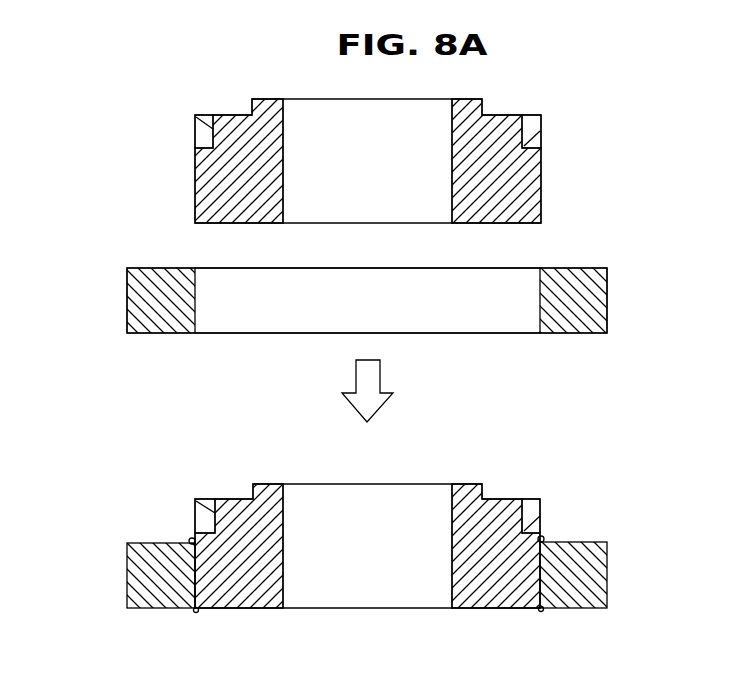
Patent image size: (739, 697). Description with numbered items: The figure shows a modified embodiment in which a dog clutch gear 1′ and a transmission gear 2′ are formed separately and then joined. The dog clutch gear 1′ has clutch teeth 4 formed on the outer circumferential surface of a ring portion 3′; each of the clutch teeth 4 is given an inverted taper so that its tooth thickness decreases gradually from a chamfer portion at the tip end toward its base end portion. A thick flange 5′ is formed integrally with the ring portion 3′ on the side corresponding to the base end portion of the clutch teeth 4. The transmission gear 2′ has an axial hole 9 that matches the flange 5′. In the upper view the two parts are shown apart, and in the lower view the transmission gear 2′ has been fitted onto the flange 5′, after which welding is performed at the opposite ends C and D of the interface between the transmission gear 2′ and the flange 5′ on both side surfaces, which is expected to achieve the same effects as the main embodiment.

The dog clutch gear 1′ is at (212, 98).
The transmission gear 2′ is at (143, 250).
The ring portion 3′ is at (272, 122).
The clutch teeth 4 is at (535, 132).
The flange 5′ is at (522, 183).
The axial hole 9 is at (508, 276).
The end of interface C is at (186, 537).
The end of interface D is at (193, 615).